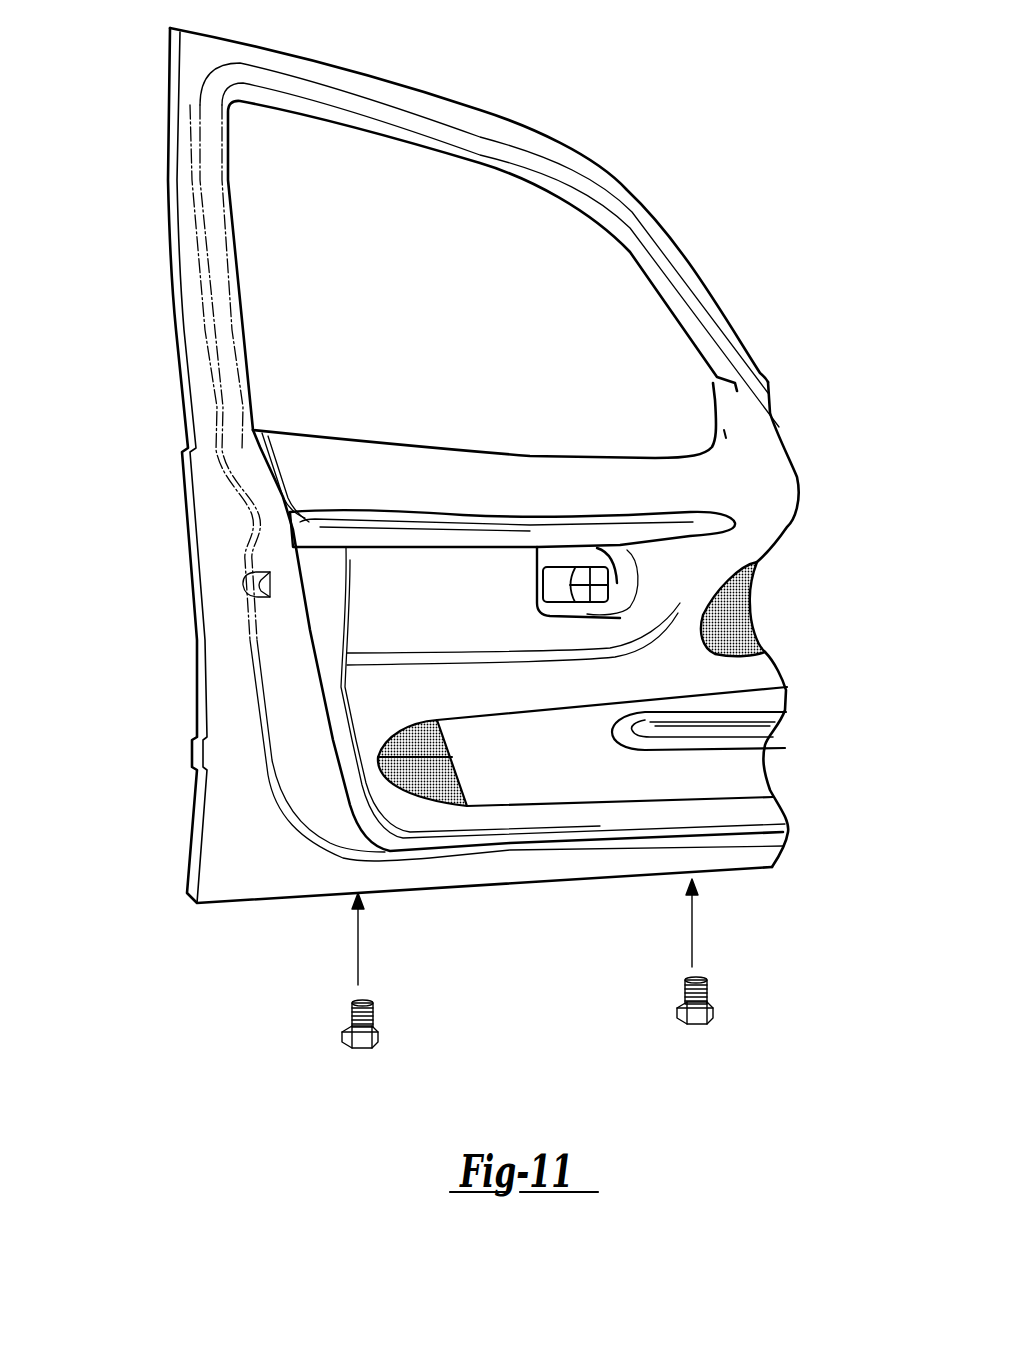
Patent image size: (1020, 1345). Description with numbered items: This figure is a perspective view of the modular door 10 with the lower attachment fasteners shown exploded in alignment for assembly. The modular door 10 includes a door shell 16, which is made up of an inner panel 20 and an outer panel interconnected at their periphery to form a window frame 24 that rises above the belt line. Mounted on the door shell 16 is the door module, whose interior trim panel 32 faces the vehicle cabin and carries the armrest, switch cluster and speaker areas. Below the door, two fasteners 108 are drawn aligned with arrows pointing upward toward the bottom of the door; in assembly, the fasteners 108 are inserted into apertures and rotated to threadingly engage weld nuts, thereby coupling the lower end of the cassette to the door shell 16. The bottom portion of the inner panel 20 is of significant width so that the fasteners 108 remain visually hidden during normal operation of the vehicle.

The modular door 10 is at (132, 156).
The door shell 16 is at (137, 392).
The inner panel 20 is at (293, 890).
The window frame 24 is at (415, 118).
The interior trim panel 32 is at (782, 480).
The fasteners 108 is at (359, 1050).